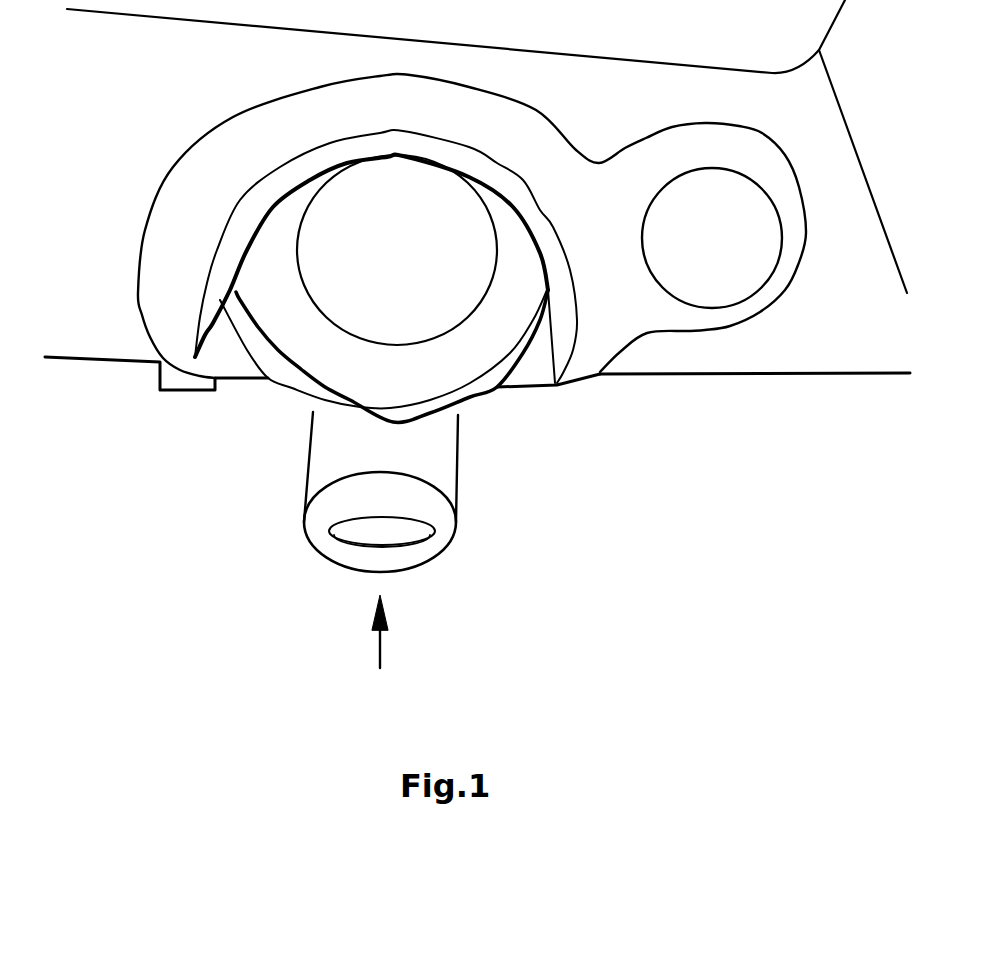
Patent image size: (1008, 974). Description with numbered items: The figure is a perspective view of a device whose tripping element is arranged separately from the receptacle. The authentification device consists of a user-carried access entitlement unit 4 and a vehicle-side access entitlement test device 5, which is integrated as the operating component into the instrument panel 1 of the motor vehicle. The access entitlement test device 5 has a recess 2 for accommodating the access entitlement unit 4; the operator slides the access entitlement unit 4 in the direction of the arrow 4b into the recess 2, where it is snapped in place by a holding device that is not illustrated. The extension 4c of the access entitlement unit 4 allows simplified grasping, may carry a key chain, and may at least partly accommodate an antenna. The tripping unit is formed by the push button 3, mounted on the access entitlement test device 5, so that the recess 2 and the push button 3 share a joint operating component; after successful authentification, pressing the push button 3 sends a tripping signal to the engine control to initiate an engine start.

The instrument panel 1 is at (835, 157).
The recess 2 is at (223, 365).
The push button 3 is at (757, 267).
The access entitlement unit 4 is at (477, 363).
The arrow 4b is at (383, 648).
The extension 4c is at (443, 470).
The access entitlement test device 5 is at (157, 325).